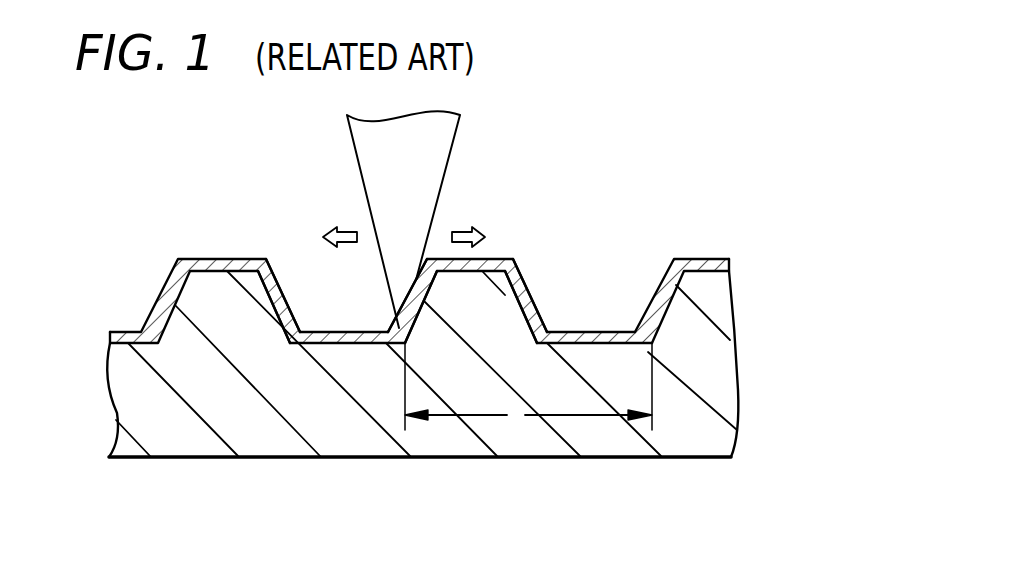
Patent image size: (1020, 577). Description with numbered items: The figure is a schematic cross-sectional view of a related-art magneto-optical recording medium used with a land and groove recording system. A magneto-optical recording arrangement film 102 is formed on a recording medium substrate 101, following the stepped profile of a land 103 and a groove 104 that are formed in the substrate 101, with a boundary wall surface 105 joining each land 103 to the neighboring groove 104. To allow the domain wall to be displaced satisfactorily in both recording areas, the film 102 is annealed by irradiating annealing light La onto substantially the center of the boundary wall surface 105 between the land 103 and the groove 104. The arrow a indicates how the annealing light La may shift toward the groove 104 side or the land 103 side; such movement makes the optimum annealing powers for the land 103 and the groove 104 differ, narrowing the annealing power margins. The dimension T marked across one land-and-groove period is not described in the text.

The recording medium substrate 101 is at (335, 443).
The magneto-optical recording arrangement film 102 is at (213, 257).
The land 103 is at (501, 262).
The groove 104 is at (600, 332).
The boundary wall surface 105 is at (412, 298).
The annealing light La is at (460, 138).
The arrow a is at (338, 223).
The track pitch T is at (528, 388).